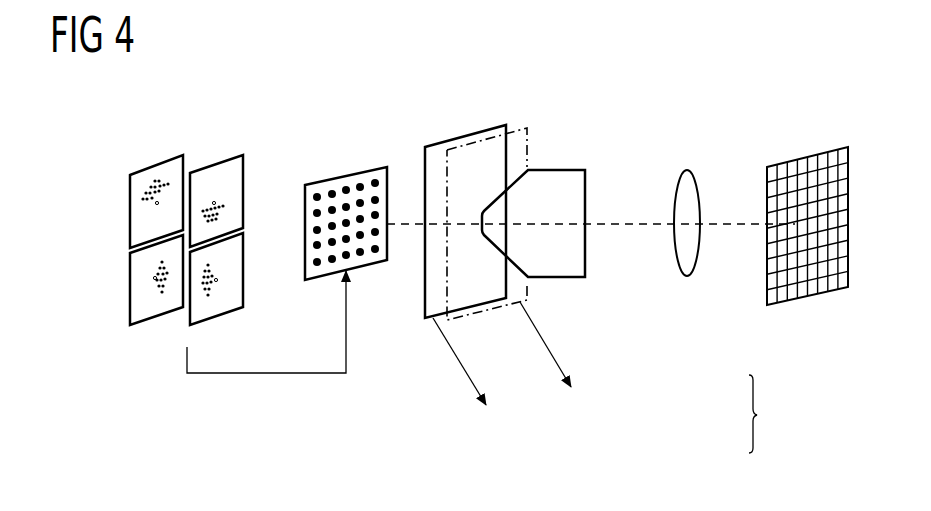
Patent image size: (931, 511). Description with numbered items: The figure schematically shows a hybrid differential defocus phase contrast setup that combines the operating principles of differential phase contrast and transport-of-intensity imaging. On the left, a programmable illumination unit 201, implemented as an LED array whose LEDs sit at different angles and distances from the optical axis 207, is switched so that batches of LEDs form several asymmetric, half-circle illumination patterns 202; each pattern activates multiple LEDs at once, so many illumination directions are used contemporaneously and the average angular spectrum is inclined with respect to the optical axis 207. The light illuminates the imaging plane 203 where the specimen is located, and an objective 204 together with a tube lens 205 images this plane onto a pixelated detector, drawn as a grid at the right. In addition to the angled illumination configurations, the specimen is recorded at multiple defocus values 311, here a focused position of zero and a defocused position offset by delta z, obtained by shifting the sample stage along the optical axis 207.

The programmable illumination unit 201 is at (348, 156).
The illumination patterns 202 is at (213, 160).
The imaging plane 203 is at (542, 301).
The objective 204 is at (556, 178).
The tube lens 205 is at (687, 169).
The optical axis 207 is at (623, 222).
The defocus values 311 is at (616, 377).